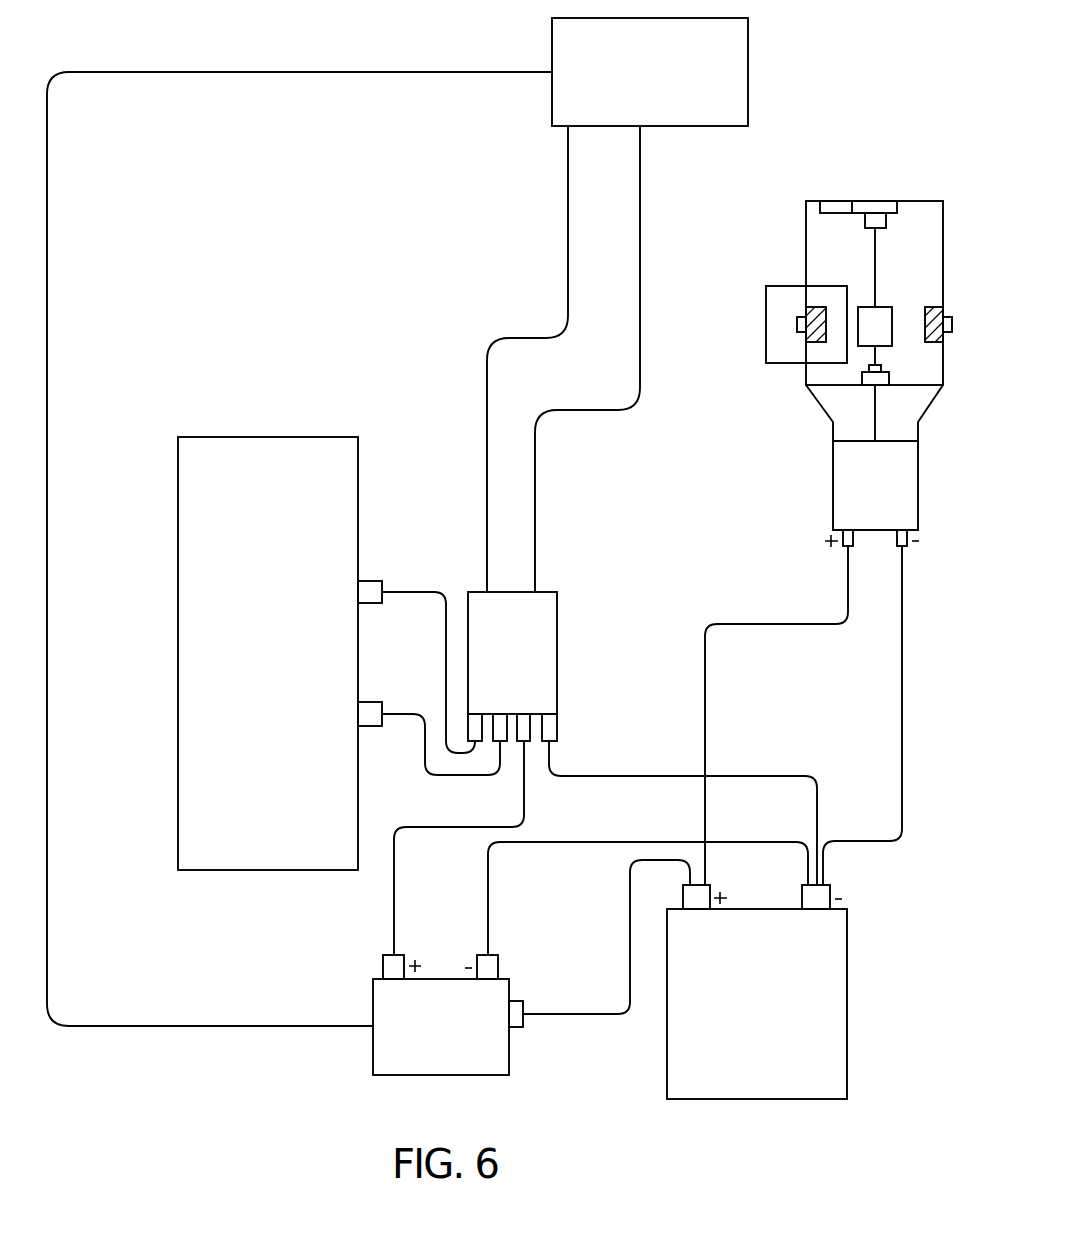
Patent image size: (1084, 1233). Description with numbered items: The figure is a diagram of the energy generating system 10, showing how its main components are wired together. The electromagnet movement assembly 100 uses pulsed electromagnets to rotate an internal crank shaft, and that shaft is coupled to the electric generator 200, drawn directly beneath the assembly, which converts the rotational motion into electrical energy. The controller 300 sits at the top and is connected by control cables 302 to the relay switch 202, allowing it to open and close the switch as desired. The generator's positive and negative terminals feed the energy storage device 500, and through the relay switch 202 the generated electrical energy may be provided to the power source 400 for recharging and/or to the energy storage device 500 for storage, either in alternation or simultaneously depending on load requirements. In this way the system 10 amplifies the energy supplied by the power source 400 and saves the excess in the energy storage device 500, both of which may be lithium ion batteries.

The energy generating system 10 is at (864, 74).
The electromagnet movement assembly 100 is at (769, 221).
The electric generator 200 is at (833, 482).
The relay switch 202 is at (557, 627).
The controller 300 is at (748, 72).
The control cables 302 is at (568, 236).
The power source 400 is at (509, 1034).
The energy storage device 500 is at (847, 1000).